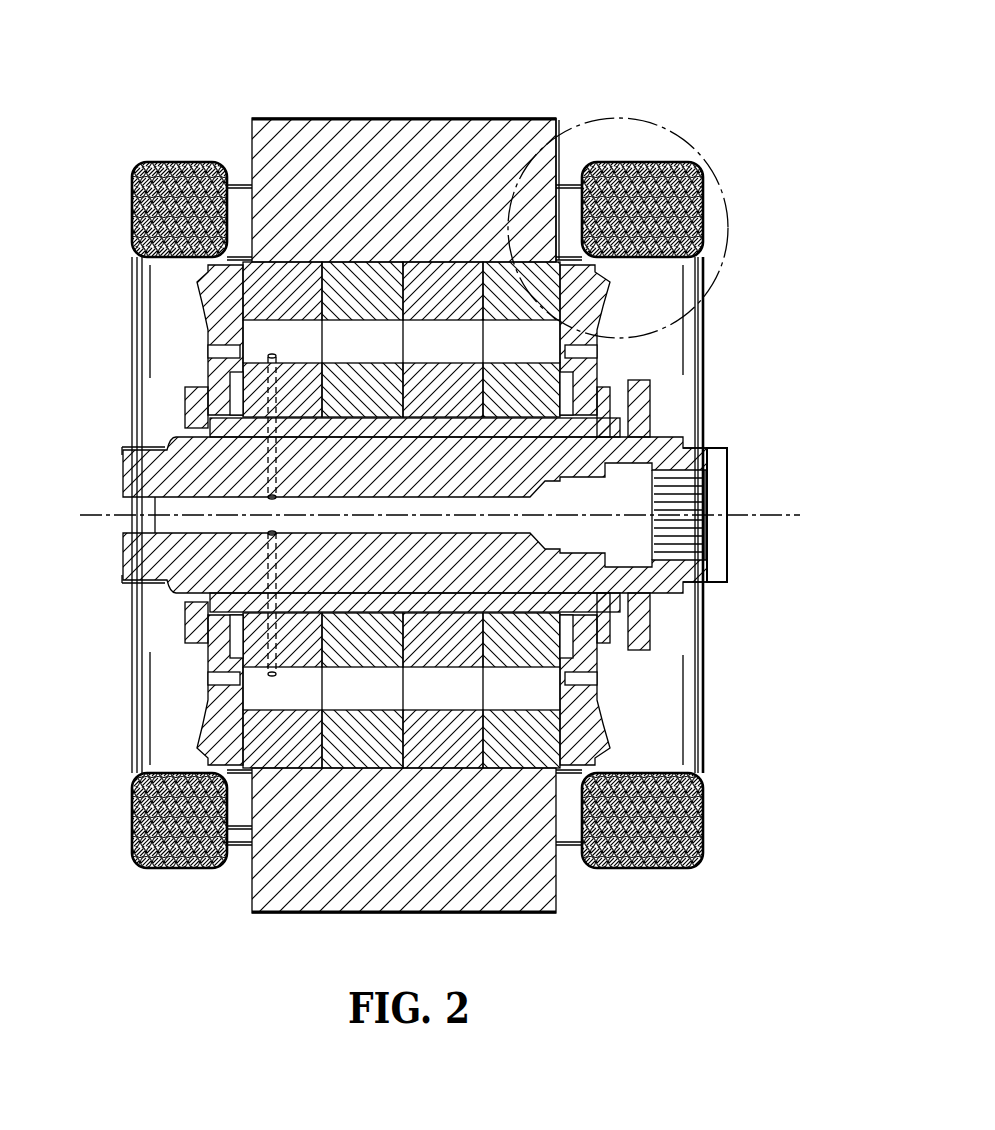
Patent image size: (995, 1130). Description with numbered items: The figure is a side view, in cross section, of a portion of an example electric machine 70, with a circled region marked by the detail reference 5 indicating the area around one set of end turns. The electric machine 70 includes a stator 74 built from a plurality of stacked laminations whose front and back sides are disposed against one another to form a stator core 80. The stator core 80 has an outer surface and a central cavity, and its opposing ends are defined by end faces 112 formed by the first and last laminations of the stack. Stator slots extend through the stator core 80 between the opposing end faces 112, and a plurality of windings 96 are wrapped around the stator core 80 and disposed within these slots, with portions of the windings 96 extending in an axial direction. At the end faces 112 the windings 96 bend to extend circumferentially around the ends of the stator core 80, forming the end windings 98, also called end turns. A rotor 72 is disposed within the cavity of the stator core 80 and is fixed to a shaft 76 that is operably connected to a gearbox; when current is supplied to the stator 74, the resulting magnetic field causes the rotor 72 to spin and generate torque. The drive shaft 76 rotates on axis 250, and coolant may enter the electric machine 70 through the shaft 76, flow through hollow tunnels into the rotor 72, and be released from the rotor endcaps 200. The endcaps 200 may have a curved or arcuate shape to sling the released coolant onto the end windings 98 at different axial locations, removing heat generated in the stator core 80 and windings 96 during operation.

The electric machine 70 is at (213, 80).
The rotor 72 is at (512, 292).
The stator 74 is at (326, 118).
The shaft 76 is at (717, 448).
The stator core 80 is at (436, 118).
The windings 96 is at (240, 828).
The end windings 98 is at (680, 178).
The end faces 112 is at (250, 150).
The rotor endcaps 200 is at (227, 300).
The axis 250 is at (790, 491).
The detail view reference 5 is at (730, 232).